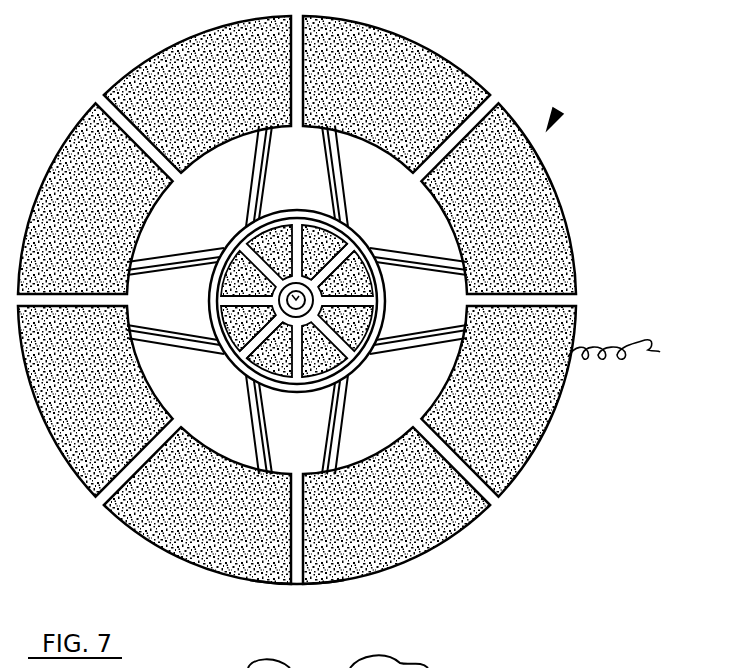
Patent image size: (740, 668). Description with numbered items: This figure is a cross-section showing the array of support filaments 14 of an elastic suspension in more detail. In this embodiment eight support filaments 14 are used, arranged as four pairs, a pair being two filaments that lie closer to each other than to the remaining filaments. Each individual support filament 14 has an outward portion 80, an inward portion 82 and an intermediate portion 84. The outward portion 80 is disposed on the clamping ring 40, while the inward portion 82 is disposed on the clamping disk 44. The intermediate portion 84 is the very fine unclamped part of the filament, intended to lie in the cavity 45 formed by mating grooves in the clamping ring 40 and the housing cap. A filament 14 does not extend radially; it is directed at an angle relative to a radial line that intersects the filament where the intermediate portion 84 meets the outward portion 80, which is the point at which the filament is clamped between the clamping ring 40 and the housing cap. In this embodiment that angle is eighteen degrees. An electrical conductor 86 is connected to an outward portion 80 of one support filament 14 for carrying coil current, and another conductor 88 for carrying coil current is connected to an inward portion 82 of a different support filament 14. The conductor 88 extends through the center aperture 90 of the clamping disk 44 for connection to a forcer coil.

The support filament 14 is at (552, 122).
The clamping ring 40 is at (295, 585).
The clamping disk 44 is at (243, 232).
The cavity 45 is at (330, 167).
The outward portion 80 is at (68, 182).
The inward portion 82 is at (320, 212).
The intermediate portion 84 is at (328, 144).
The electrical conductor 86 is at (633, 362).
The conductor 88 is at (268, 312).
The center aperture 90 is at (298, 287).